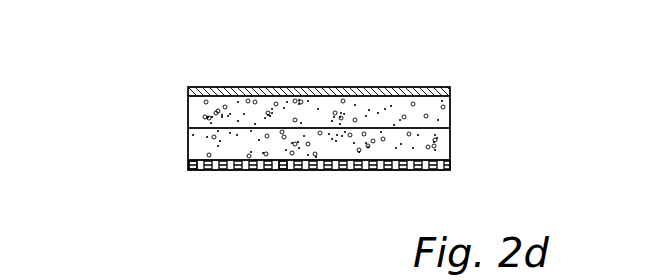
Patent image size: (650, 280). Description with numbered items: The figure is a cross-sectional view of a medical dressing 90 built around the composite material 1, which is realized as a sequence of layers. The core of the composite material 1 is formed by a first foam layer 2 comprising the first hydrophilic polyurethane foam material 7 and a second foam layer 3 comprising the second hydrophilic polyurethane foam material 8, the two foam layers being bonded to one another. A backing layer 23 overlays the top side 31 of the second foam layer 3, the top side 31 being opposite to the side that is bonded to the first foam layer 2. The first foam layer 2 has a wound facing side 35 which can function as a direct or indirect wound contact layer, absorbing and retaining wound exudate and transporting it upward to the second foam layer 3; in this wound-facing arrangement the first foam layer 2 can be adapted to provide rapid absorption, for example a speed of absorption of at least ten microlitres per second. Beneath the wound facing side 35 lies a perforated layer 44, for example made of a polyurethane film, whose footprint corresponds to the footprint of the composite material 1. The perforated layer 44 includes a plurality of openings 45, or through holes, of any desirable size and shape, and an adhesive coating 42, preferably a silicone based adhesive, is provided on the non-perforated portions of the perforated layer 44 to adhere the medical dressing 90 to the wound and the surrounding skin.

The medical dressing 90 is at (277, 127).
The composite material 1 is at (297, 127).
The backing layer 23 is at (318, 55).
The top side of the second foam layer 31 is at (367, 95).
The second hydrophilic polyurethane foam material 8 is at (293, 112).
The second foam layer 3 is at (290, 78).
The first foam layer 2 is at (290, 174).
The first hydrophilic polyurethane foam material 7 is at (330, 146).
The perforated layer 44 is at (268, 200).
The openings 45 is at (383, 170).
The adhesive coating 42 is at (190, 170).
The wound facing side 35 is at (285, 170).